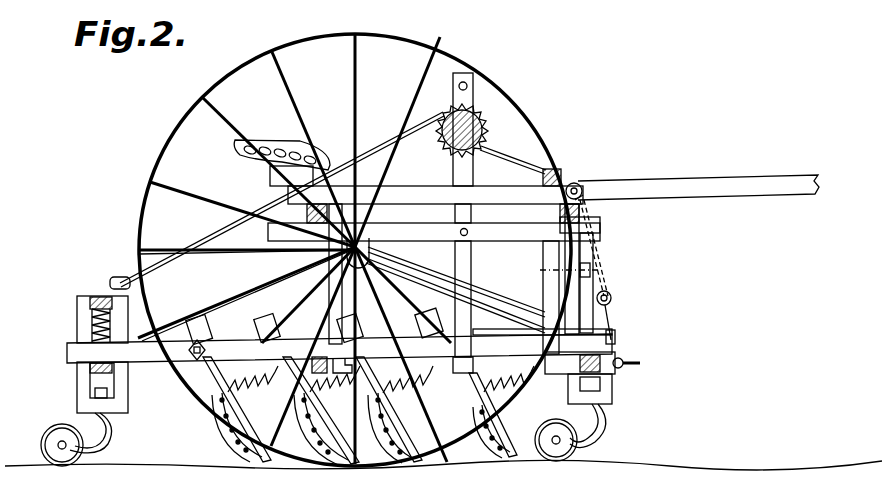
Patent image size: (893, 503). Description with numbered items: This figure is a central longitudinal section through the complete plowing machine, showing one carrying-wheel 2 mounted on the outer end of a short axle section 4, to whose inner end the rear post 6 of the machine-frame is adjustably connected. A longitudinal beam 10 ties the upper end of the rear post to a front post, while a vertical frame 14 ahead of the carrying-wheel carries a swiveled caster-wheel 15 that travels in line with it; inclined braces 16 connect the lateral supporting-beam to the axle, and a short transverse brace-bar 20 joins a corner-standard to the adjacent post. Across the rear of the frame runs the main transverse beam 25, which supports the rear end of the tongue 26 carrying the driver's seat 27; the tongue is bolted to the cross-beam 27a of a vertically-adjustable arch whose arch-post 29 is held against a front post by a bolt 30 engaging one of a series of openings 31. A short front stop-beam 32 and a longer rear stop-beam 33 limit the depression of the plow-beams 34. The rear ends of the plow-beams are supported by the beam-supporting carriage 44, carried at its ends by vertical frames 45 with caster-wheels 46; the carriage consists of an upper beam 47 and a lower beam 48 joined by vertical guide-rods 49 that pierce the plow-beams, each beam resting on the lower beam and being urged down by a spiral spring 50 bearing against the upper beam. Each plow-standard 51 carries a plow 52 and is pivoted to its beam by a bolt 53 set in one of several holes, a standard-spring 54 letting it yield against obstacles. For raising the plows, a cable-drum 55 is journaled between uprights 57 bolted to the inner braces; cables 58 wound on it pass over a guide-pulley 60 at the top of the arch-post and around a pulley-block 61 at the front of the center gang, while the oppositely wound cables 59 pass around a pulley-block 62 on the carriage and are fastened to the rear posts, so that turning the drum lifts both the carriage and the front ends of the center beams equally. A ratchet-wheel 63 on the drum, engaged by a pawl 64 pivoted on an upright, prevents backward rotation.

The carrying-wheel 2 is at (412, 42).
The axle section 4 is at (362, 244).
The rear post 6 is at (335, 274).
The longitudinal beam 10 is at (601, 226).
The vertical frame 14 is at (613, 393).
The caster-wheel 15 is at (586, 443).
The inclined brace 16 is at (455, 295).
The transverse brace-bar 20 is at (594, 246).
The main transverse beam 25 is at (435, 203).
The tongue 26 is at (691, 187).
The driver's seat 27 is at (270, 137).
The cross-beam 27a is at (590, 197).
The arch-post 29 is at (554, 167).
The bolt 30 is at (592, 268).
The openings 31 is at (540, 331).
The front stop-beam 32 is at (568, 375).
The rear stop-beam 33 is at (318, 357).
The plow-beam 34 is at (166, 356).
The beam-supporting carriage 44 is at (77, 303).
The vertical frame 45 is at (80, 395).
The caster-wheel 46 is at (52, 432).
The upper carriage beam 47 is at (95, 297).
The lower carriage beam 48 is at (90, 368).
The guide-rod 49 is at (92, 334).
The spiral spring 50 is at (92, 322).
The plow-standard 51 is at (420, 323).
The plow 52 is at (270, 436).
The bolt 53 is at (205, 348).
The standard-spring 54 is at (381, 385).
The cable-drum 55 is at (486, 133).
The upright 57 is at (470, 280).
The cable 58 is at (218, 236).
The cable 59 is at (610, 282).
The guide-pulley 60 is at (577, 184).
The pulley-block 61 is at (612, 302).
The pulley-block 62 is at (128, 278).
The ratchet-wheel 63 is at (493, 122).
The pawl 64 is at (470, 92).